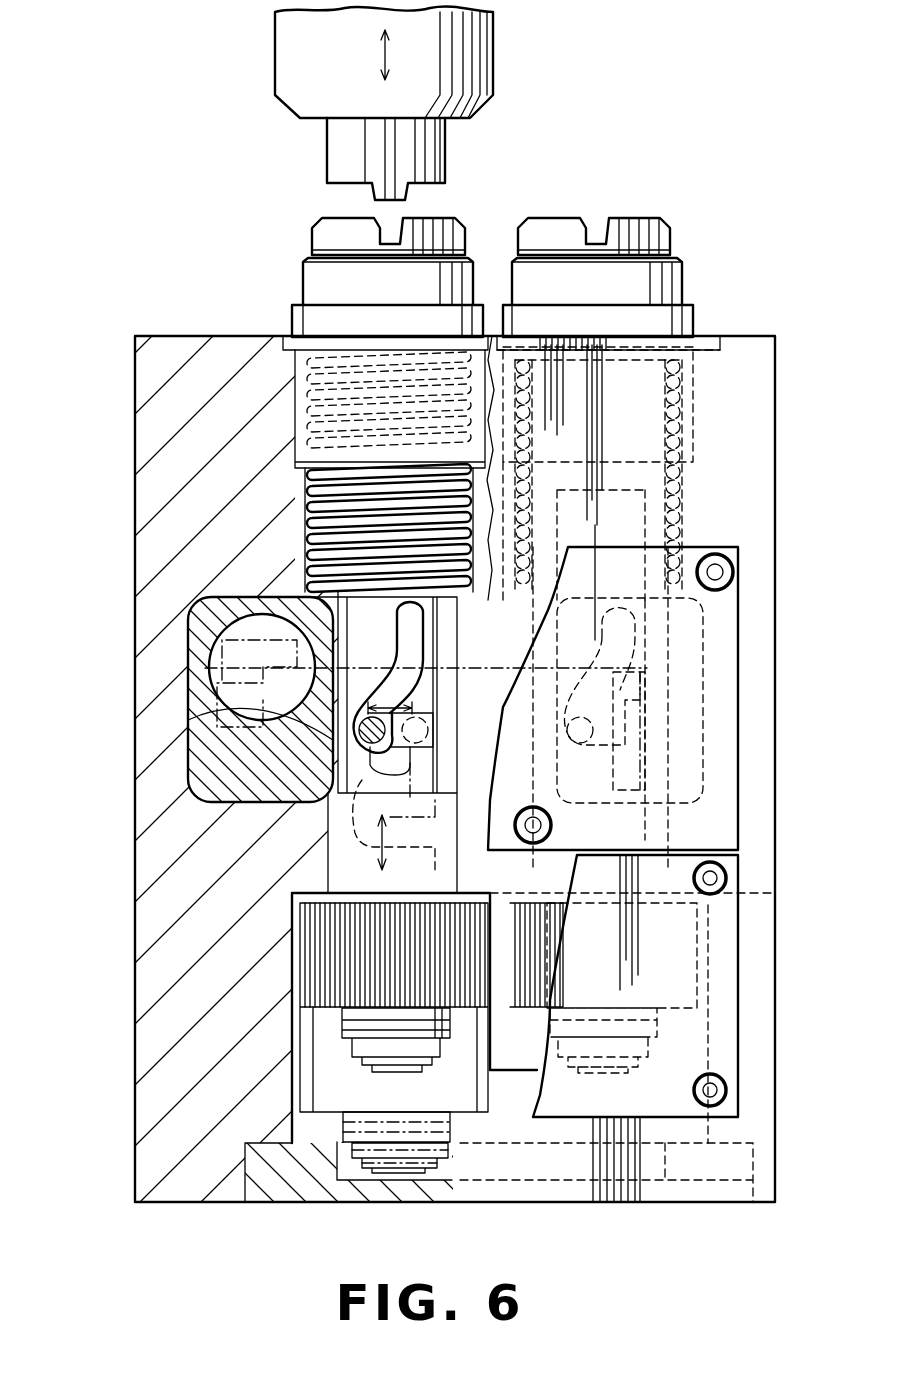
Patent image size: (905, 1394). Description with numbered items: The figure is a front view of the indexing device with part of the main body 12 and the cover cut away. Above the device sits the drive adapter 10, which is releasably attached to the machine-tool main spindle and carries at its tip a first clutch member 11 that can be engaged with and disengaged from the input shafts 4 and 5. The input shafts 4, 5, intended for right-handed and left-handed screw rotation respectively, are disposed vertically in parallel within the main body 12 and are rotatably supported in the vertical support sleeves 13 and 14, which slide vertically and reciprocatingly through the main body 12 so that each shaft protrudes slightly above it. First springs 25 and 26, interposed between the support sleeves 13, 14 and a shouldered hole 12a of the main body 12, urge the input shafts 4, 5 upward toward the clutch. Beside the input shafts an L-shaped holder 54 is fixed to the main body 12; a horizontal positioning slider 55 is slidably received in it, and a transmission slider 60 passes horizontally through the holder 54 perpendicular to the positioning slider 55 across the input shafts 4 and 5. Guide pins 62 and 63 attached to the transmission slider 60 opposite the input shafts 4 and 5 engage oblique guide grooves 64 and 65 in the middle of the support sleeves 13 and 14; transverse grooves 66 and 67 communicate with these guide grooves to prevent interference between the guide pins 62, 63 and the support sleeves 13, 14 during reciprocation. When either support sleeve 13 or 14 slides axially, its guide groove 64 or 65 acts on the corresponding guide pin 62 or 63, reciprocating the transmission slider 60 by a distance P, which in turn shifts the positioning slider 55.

The drive adapter 10 is at (493, 48).
The first clutch member 11 is at (445, 152).
The input shaft 4 is at (312, 233).
The input shaft 5 is at (630, 247).
The support sleeve 13 is at (303, 281).
The support sleeve 14 is at (684, 286).
The main body 12 is at (125, 368).
The shouldered hole 12a is at (305, 578).
The first spring 25 is at (305, 464).
The first spring 26 is at (680, 372).
The holder 54 is at (212, 640).
The positioning slider 55 is at (215, 650).
The transmission slider 60 is at (607, 797).
The guide pin 62 is at (358, 728).
The guide pin 63 is at (648, 718).
The guide groove 64 is at (398, 638).
The guide groove 65 is at (650, 637).
The transverse groove 66 is at (190, 722).
The transverse groove 67 is at (633, 740).